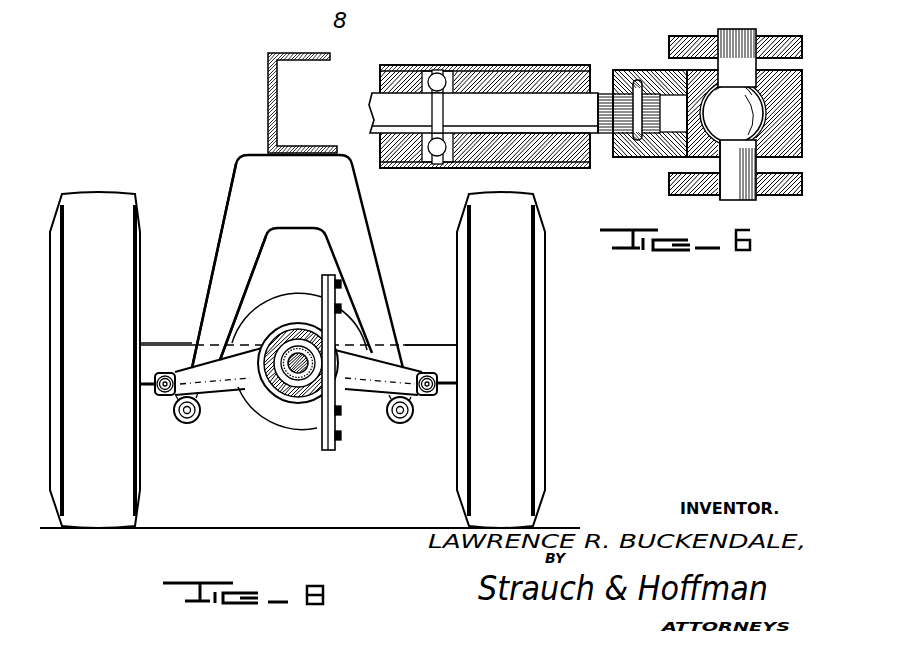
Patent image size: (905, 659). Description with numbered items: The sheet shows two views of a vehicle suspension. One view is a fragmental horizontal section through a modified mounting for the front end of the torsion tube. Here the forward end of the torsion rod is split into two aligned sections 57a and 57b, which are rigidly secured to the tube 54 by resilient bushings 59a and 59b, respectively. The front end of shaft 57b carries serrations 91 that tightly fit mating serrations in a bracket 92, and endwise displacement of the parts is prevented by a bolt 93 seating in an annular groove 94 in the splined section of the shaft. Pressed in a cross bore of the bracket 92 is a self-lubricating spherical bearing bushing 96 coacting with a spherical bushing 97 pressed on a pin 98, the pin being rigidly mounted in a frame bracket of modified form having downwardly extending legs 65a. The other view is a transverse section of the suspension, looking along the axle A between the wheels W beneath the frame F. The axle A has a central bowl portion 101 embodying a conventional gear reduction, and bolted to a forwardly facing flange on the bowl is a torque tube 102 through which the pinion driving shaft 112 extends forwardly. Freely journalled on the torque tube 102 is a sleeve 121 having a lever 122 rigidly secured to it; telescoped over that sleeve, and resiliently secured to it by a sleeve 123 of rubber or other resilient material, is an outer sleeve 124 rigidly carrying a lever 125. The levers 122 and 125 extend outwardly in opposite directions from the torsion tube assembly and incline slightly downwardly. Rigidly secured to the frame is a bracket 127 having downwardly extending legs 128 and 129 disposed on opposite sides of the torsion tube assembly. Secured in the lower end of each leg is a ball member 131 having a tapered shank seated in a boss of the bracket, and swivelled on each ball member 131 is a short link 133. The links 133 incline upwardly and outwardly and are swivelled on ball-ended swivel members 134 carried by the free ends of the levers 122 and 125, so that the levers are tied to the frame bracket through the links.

In FIG. 6, the tube 54 is at (481, 65).
In FIG. 6, the torsion rod section 57a is at (483, 113).
In FIG. 6, the torsion rod section 57b is at (560, 118).
In FIG. 6, the resilient bushing 59a is at (393, 168).
In FIG. 6, the resilient bushing 59b is at (528, 168).
In FIG. 6, the serrations 91 is at (617, 122).
In FIG. 6, the bracket 92 is at (640, 152).
In FIG. 6, the bolt 93 is at (638, 80).
In FIG. 6, the annular groove 94 is at (603, 93).
In FIG. 6, the spherical bearing bushing 96 is at (759, 35).
In FIG. 6, the spherical bushing 97 is at (744, 113).
In FIG. 6, the pin 98 is at (728, 190).
In FIG. 6, the legs 65a is at (686, 37).
In FIG. 8, the wheel W is at (525, 352).
In FIG. 8, the frame F is at (268, 87).
In FIG. 8, the axle A is at (423, 347).
In FIG. 8, the central bowl portion 101 is at (320, 452).
In FIG. 8, the torque tube 102 is at (299, 327).
In FIG. 8, the pinion driving shaft 112 is at (297, 403).
In FIG. 8, the sleeve 121 is at (290, 327).
In FIG. 8, the lever 122 is at (370, 374).
In FIG. 8, the resilient sleeve 123 is at (263, 333).
In FIG. 8, the outer sleeve 124 is at (272, 400).
In FIG. 8, the lever 125 is at (238, 376).
In FIG. 8, the bracket 127 is at (237, 171).
In FIG. 8, the leg 128 is at (208, 308).
In FIG. 8, the leg 129 is at (383, 322).
In FIG. 8, the ball member 131 is at (190, 424).
In FIG. 8, the link 133 is at (178, 402).
In FIG. 8, the swivel member 134 is at (165, 372).